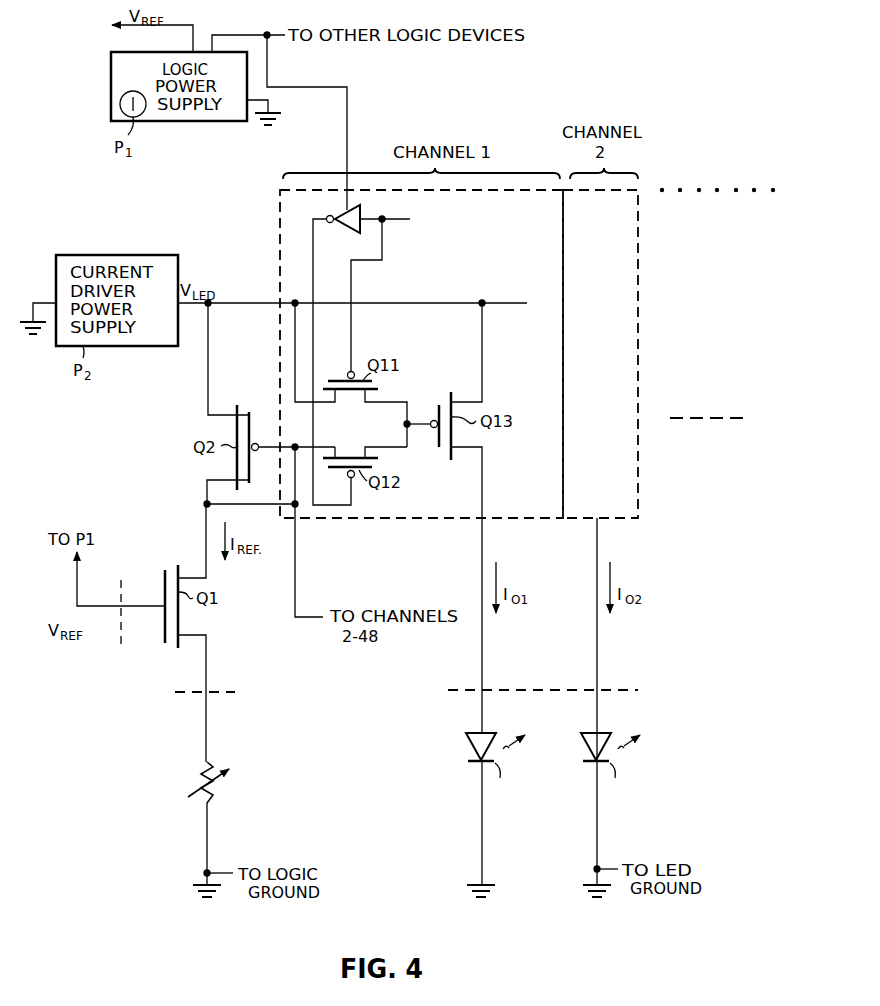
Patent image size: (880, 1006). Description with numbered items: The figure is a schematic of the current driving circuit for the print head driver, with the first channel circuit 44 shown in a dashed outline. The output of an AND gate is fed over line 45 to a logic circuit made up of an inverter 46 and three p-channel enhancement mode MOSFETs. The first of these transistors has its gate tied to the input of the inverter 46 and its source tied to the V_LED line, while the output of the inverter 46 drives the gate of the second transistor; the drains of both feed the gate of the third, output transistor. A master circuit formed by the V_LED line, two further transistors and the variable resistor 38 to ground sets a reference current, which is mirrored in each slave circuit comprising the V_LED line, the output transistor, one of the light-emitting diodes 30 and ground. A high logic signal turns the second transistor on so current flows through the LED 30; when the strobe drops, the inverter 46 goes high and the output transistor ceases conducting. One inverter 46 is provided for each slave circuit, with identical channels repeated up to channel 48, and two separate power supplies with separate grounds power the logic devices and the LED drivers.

The point-like radiation sources 30 is at (470, 745).
The variable resistor 38 is at (200, 777).
The channel driver circuit 44 is at (276, 202).
The line 45 is at (410, 222).
The inverter 46 is at (346, 234).
The channel 48 is at (720, 280).